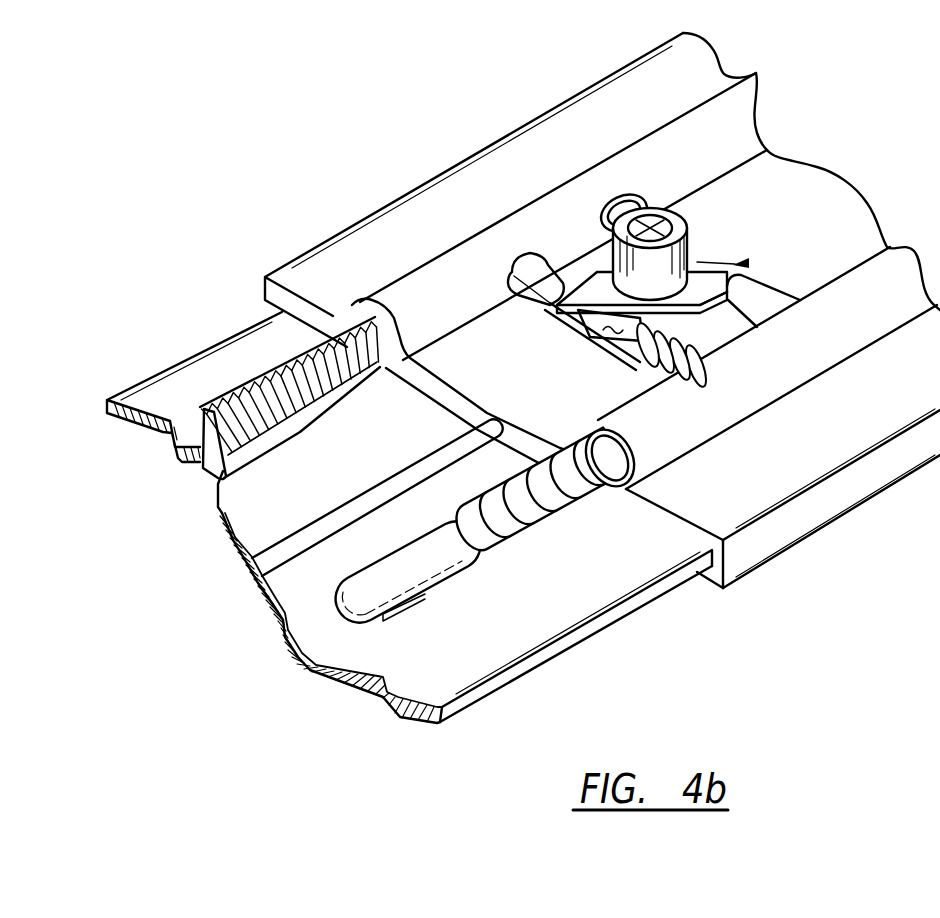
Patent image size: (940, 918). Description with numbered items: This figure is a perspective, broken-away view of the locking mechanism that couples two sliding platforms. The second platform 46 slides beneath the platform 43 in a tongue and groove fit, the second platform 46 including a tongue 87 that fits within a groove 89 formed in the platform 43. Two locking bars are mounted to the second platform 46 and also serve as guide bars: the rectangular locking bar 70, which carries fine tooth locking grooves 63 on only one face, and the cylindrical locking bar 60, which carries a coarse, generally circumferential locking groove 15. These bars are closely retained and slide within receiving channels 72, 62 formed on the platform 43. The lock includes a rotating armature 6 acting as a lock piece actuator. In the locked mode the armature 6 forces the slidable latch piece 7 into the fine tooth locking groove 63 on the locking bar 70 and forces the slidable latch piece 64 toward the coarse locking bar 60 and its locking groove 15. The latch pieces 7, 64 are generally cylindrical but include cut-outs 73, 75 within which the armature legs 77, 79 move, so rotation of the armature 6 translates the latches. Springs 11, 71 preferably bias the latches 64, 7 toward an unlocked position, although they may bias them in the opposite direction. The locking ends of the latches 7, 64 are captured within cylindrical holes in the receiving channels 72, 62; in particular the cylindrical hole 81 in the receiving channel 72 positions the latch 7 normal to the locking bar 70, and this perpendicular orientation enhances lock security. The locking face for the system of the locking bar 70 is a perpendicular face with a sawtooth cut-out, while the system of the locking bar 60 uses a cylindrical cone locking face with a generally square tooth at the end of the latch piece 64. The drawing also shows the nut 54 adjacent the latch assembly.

The locking bar 70 is at (253, 378).
The fine tooth locking grooves 63 is at (252, 322).
The receiving channel 72 is at (445, 250).
The cylindrical hole 81 is at (529, 253).
The spring 71 is at (645, 205).
The threaded nut 54 is at (680, 213).
The cut-out 75 is at (707, 258).
The armature 6 is at (749, 263).
The armature leg 77 is at (733, 275).
The receiving channel 62 is at (870, 256).
The slidable latch piece 64 is at (785, 298).
The platform 43 is at (837, 535).
The groove 89 is at (725, 557).
The tongue 87 is at (667, 593).
The second platform 46 is at (576, 650).
The locking bar 60 is at (446, 592).
The coarse locking groove 15 is at (532, 532).
The spring 11 is at (655, 378).
The cut-out 73 is at (600, 348).
The armature leg 79 is at (580, 311).
The slidable latch piece 7 is at (523, 295).